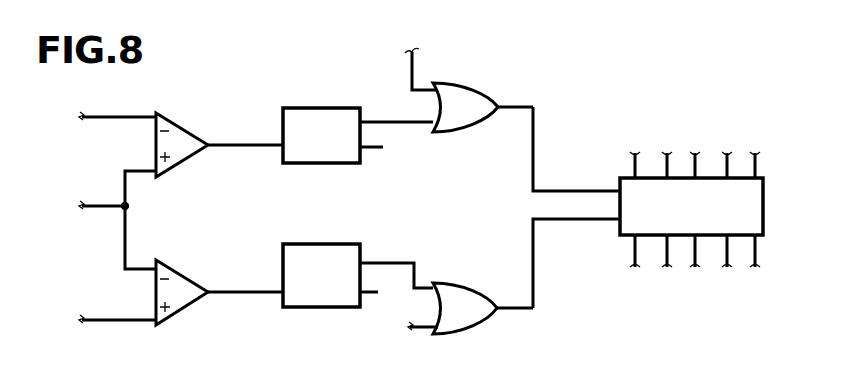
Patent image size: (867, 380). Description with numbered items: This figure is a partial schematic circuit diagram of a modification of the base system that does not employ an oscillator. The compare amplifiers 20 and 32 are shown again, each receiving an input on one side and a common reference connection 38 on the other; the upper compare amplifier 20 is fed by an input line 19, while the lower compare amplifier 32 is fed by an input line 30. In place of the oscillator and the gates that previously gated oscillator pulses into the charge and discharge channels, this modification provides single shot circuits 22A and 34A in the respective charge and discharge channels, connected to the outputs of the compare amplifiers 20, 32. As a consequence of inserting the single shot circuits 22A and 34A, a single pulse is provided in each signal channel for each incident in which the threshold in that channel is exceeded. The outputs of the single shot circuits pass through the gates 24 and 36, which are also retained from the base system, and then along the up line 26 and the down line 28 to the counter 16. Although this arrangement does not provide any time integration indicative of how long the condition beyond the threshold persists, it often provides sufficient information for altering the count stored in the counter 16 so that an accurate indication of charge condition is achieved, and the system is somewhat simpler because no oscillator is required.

The first input signal line 19 is at (118, 112).
The compare amplifier 20 is at (164, 115).
The reference input line 38 is at (107, 205).
The second input signal line 30 is at (115, 320).
The compare amplifier 32 is at (180, 276).
The single shot circuit 22A is at (307, 108).
The single shot circuit 34A is at (306, 244).
The gate 24 is at (471, 84).
The gate 36 is at (485, 283).
The up count line 26 is at (533, 163).
The down count line 28 is at (533, 260).
The counter 16 is at (763, 178).